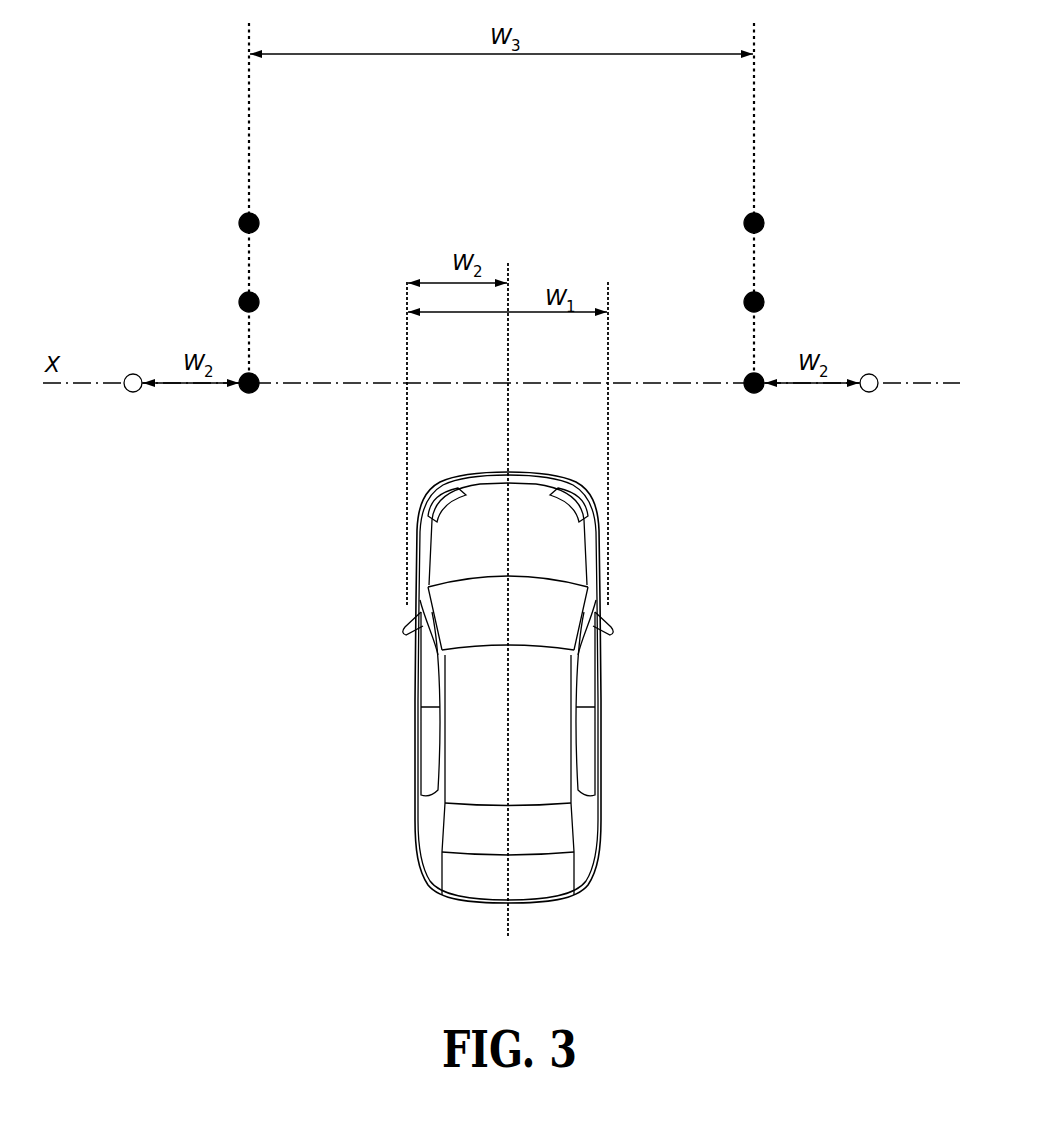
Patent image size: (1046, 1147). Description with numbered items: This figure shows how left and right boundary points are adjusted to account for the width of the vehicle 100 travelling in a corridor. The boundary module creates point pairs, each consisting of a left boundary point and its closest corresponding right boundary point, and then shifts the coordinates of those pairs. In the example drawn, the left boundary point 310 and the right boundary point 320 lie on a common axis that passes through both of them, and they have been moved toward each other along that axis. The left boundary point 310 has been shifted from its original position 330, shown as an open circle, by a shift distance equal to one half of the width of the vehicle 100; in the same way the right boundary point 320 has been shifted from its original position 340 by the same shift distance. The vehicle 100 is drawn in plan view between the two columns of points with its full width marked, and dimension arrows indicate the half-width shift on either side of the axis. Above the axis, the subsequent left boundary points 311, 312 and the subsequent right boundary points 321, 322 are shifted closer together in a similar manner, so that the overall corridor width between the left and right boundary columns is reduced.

The vehicle 100 is at (600, 838).
The left boundary point 310 is at (249, 393).
The subsequent left boundary point 311 is at (252, 292).
The subsequent left boundary point 312 is at (252, 213).
The right boundary point 320 is at (754, 393).
The subsequent right boundary point 321 is at (757, 292).
The subsequent right boundary point 322 is at (757, 213).
The original position 330 is at (133, 393).
The original position 340 is at (869, 393).